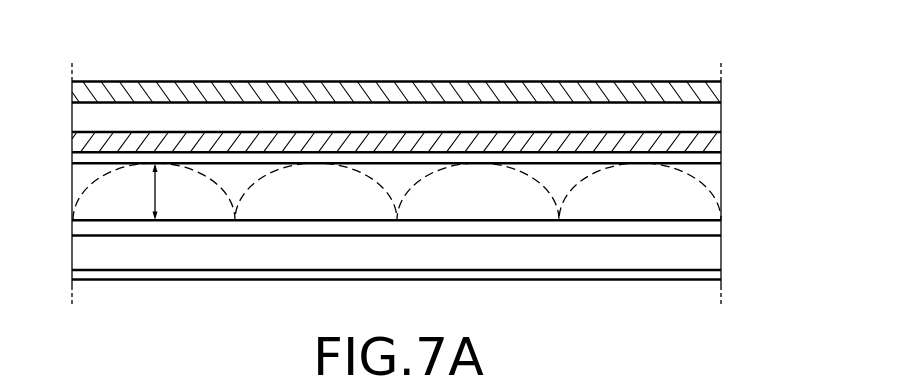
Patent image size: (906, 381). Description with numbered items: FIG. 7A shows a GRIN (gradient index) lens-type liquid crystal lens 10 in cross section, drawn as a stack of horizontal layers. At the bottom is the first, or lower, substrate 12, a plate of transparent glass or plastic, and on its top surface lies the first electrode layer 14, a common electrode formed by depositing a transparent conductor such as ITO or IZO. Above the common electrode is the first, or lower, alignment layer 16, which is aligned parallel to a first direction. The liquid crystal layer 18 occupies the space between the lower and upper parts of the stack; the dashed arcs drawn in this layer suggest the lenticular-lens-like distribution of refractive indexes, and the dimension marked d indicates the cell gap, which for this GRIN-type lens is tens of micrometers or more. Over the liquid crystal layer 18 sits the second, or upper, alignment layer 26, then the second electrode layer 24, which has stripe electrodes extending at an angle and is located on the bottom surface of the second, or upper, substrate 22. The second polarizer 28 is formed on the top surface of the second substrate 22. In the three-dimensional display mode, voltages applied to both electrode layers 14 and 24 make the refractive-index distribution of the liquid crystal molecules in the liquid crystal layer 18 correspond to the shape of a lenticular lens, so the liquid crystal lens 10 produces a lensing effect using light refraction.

The liquid crystal lens 10 is at (429, 152).
The first substrate 12 is at (721, 275).
The first electrode layer 14 is at (721, 253).
The first alignment layer 16 is at (721, 228).
The liquid crystal layer 18 is at (721, 185).
The second substrate 22 is at (721, 117).
The second electrode layer 24 is at (721, 140).
The second alignment layer 26 is at (721, 157).
The second polarizer 28 is at (721, 93).